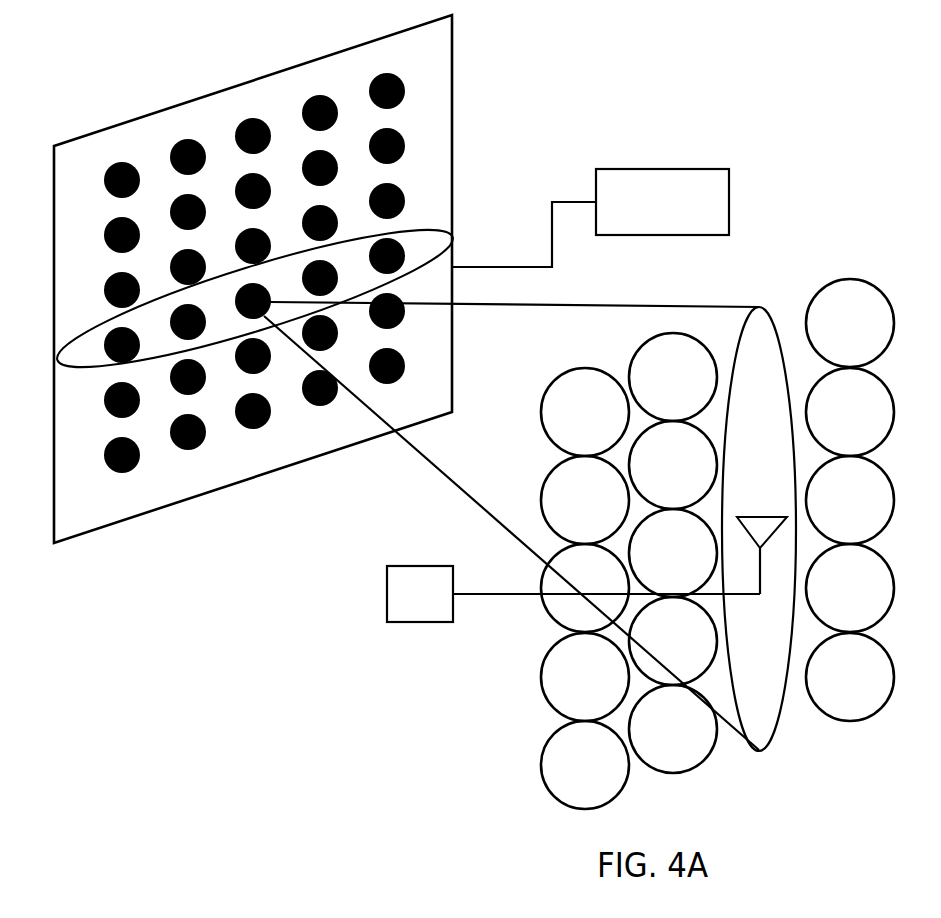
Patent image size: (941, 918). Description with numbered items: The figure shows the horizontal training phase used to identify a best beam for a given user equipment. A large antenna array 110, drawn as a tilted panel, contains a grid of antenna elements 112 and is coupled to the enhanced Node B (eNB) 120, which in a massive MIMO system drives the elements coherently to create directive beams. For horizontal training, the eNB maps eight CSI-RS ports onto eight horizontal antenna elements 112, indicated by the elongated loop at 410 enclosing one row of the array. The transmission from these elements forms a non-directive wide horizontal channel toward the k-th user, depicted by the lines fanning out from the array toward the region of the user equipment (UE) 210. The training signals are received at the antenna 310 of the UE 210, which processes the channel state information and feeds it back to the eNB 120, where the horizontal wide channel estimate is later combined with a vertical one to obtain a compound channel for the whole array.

The large antenna array 110 is at (452, 47).
The antenna elements 112 is at (404, 147).
The horizontal antenna element mapping 410 is at (452, 237).
The enhanced Node B (eNB) 120 is at (729, 185).
The user equipment (UE) 210 is at (387, 594).
The antenna 310 is at (752, 515).